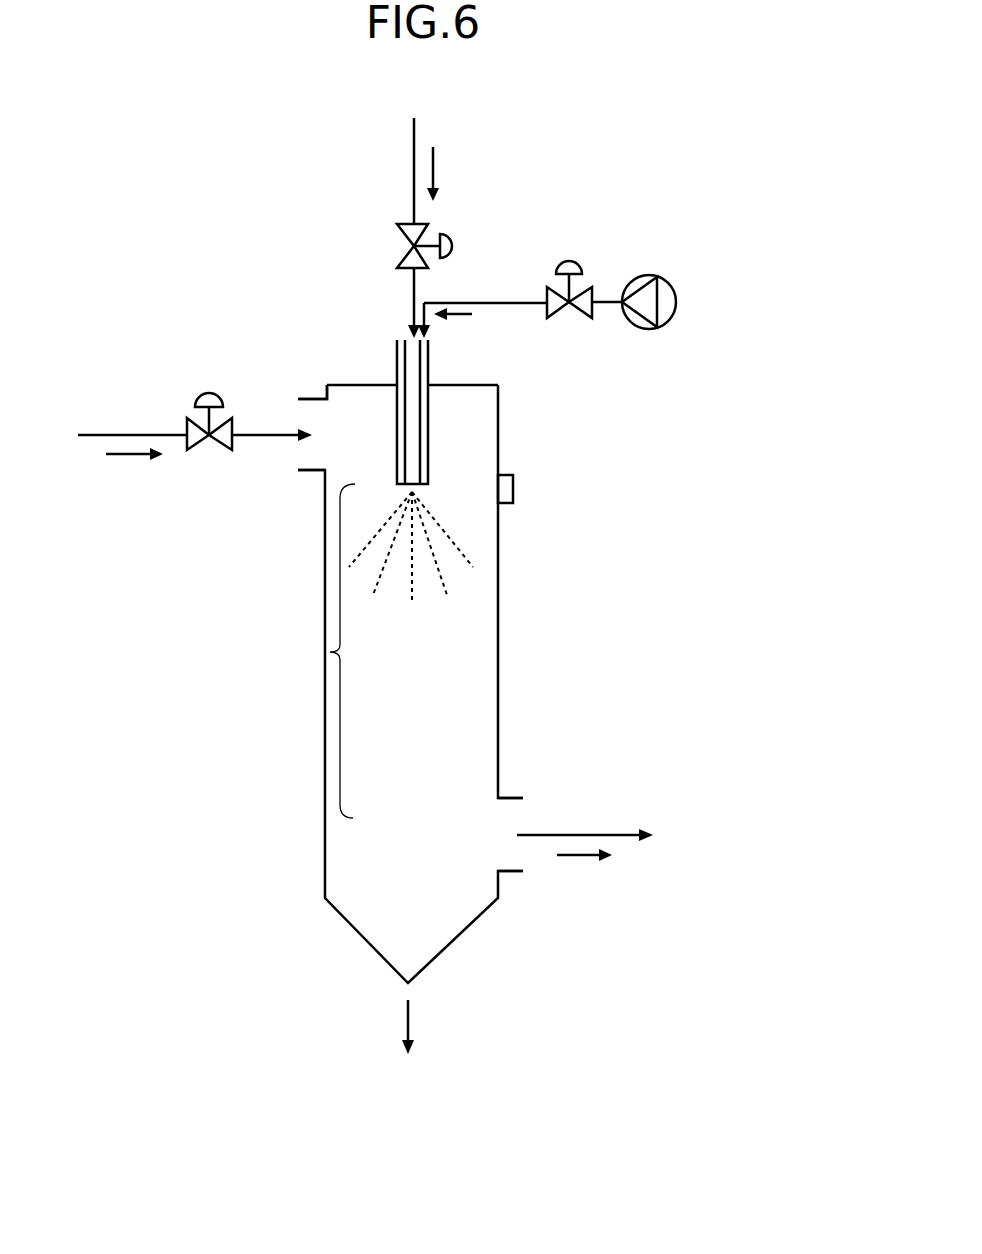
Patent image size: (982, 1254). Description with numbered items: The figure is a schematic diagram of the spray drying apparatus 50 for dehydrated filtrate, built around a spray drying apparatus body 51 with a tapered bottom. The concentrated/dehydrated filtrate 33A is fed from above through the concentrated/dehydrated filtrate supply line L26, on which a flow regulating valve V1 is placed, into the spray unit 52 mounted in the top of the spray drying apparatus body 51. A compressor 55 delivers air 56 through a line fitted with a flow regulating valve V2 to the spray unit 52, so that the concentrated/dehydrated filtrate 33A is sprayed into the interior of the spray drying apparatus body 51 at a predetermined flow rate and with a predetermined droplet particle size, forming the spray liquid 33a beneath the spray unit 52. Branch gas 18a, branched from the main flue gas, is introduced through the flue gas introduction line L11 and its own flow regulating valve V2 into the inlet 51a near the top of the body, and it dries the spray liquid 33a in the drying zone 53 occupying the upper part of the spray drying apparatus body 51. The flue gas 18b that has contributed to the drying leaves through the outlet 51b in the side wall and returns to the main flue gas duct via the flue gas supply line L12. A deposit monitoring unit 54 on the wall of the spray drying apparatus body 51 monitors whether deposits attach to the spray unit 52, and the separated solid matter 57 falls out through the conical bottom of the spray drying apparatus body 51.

The spray drying apparatus 50 is at (218, 177).
The concentrated/dehydrated filtrate supply line L26 is at (414, 163).
The concentrated/dehydrated filtrate 33A is at (440, 170).
The flow regulating valve V1 is at (455, 246).
The flow regulating valve V2 is at (566, 258).
The compressor 55 is at (676, 302).
The air 56 is at (458, 317).
The spray unit 52 is at (420, 430).
The spray liquid 33a is at (362, 551).
The spray drying apparatus body 51 is at (325, 760).
The inlet 51a is at (298, 399).
The outlet 51b is at (513, 798).
The drying zone 53 is at (330, 652).
The deposit monitoring unit 54 is at (513, 488).
The flue gas introduction line L11 is at (112, 433).
The branch gas 18a is at (130, 456).
The flue gas supply line L12 is at (588, 834).
The flue gas 18b is at (578, 857).
The separated solid matter 57 is at (412, 1020).